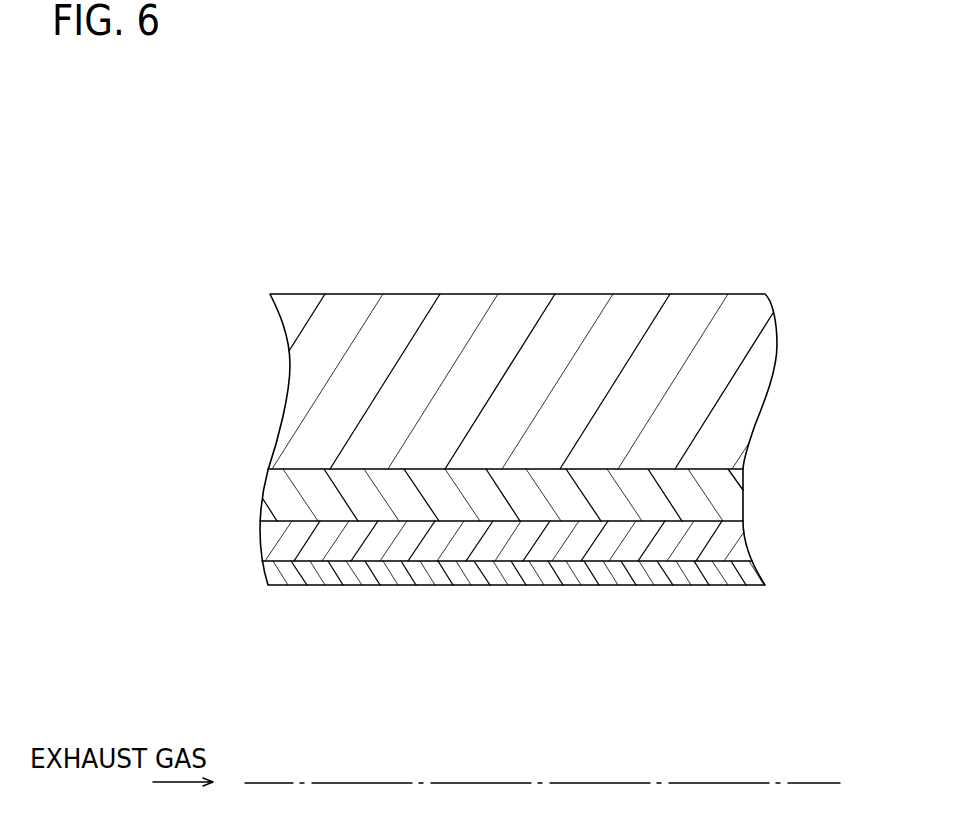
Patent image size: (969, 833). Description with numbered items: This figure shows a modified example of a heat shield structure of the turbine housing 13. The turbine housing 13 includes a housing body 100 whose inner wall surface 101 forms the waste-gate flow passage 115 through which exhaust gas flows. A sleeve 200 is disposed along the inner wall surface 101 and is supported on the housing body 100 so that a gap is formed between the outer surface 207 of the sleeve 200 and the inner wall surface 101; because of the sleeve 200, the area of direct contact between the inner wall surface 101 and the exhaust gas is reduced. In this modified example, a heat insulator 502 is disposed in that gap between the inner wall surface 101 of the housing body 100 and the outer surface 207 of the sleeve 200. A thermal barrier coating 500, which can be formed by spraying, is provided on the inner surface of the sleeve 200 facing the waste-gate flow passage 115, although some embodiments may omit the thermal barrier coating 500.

The turbine housing 13 is at (501, 180).
The housing body 100 is at (537, 323).
The heat insulator 502 is at (570, 488).
The inner wall surface 101 is at (333, 470).
The sleeve 200 is at (287, 543).
The outer surface 207 is at (703, 523).
The thermal barrier coating 500 is at (537, 587).
The waste-gate flow passage 115 is at (418, 696).